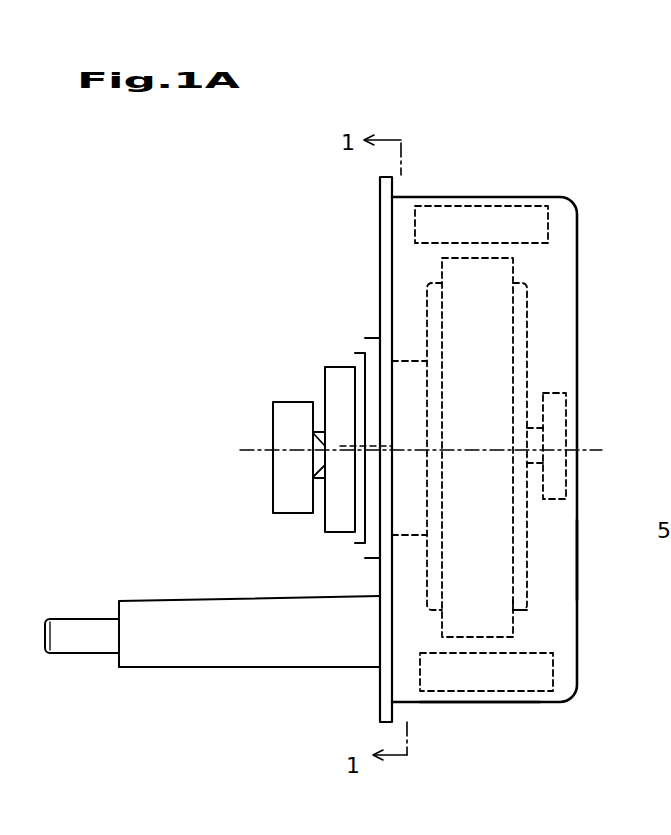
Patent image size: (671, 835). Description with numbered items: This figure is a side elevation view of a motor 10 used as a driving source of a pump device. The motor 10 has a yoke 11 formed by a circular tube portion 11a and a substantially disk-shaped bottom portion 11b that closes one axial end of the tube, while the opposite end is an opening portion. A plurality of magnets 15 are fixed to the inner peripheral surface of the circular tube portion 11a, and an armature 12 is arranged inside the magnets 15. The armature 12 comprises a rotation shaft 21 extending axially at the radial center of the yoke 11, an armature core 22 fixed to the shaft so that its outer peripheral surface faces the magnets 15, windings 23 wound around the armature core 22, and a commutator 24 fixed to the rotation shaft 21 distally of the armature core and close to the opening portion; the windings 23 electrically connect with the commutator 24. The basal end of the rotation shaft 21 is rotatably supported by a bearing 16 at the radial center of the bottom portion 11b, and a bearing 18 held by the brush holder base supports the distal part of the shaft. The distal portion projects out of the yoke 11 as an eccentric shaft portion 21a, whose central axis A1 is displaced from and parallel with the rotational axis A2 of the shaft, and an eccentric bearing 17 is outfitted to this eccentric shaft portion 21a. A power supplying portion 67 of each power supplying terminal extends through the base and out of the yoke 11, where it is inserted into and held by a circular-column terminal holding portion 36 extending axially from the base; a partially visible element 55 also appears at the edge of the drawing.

The motor 10 is at (528, 160).
The yoke housing 11 is at (578, 615).
The circular tube portion 11a is at (495, 702).
The bottom portion 11b is at (578, 565).
The armature 12 is at (527, 312).
The magnets 15 is at (480, 205).
The bearing 16 is at (581, 402).
The eccentric bearing 17 is at (295, 513).
The bearing 18 is at (357, 540).
The rotation shaft 21 is at (532, 465).
The eccentric shaft portion 21a is at (322, 432).
The armature core 22 is at (513, 272).
The windings 23 is at (528, 562).
The commutator 24 is at (413, 535).
The terminal holding portions 36 is at (220, 660).
The power supplying portion 67 is at (83, 627).
The central axis A1 is at (243, 455).
The rotational axis A2 is at (588, 452).
The element 55 is at (660, 556).